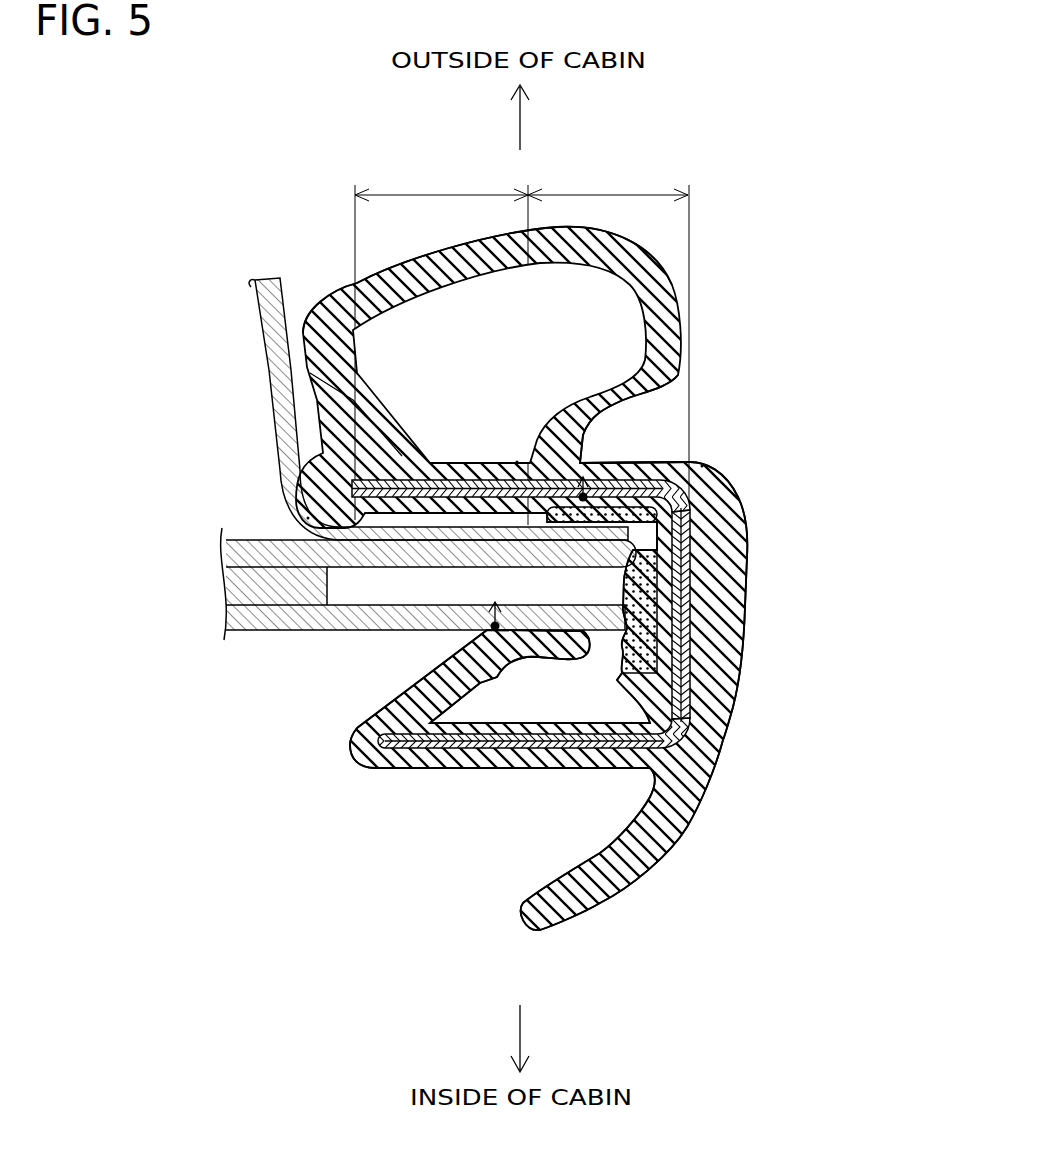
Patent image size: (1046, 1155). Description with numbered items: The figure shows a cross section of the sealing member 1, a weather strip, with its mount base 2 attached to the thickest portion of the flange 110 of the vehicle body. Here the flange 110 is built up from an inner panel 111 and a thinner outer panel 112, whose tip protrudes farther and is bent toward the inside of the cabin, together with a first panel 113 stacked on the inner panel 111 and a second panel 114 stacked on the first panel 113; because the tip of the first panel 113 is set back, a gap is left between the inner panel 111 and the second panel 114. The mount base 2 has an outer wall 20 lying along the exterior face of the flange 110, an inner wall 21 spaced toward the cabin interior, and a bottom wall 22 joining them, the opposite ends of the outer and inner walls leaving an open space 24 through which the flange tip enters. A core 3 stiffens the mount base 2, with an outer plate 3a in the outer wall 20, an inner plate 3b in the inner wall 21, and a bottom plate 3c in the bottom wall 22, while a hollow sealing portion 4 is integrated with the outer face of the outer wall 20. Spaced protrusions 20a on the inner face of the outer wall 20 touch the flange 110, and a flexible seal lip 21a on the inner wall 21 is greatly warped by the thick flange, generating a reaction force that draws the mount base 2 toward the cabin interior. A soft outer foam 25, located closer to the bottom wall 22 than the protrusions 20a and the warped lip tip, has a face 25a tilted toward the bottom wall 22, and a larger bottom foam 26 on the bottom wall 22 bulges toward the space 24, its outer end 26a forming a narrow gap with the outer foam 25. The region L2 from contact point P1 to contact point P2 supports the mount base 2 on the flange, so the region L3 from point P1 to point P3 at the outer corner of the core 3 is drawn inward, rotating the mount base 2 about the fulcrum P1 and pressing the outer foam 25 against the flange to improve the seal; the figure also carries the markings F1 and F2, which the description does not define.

The sealing member 1 is at (765, 665).
The mount base 2 is at (744, 482).
The core 3 is at (592, 608).
The outer plate 3a is at (612, 457).
The inner plate 3b is at (473, 768).
The bottom plate 3c is at (700, 603).
The hollow sealing portion 4 is at (345, 288).
The outer wall 20 is at (660, 461).
The protrusions 20a is at (462, 483).
The inner wall 21 is at (520, 768).
The seal lip 21a is at (504, 668).
The bottom wall 22 is at (735, 698).
The space 24 is at (378, 680).
The outer foam 25 is at (722, 498).
The face 25a is at (538, 460).
The bottom foam 26 is at (682, 728).
The outer end 26a is at (700, 548).
The flange 110 is at (300, 633).
The inner panel 111 is at (258, 527).
The outer panel 112 is at (285, 316).
The first panel 113 is at (257, 582).
The second panel 114 is at (246, 633).
The point of contact P1 is at (517, 462).
The point of contact P2 is at (307, 517).
The point P3 is at (703, 466).
The force F1 is at (492, 613).
The force F2 is at (600, 500).
The region L2 is at (441, 343).
The region L3 is at (608, 361).